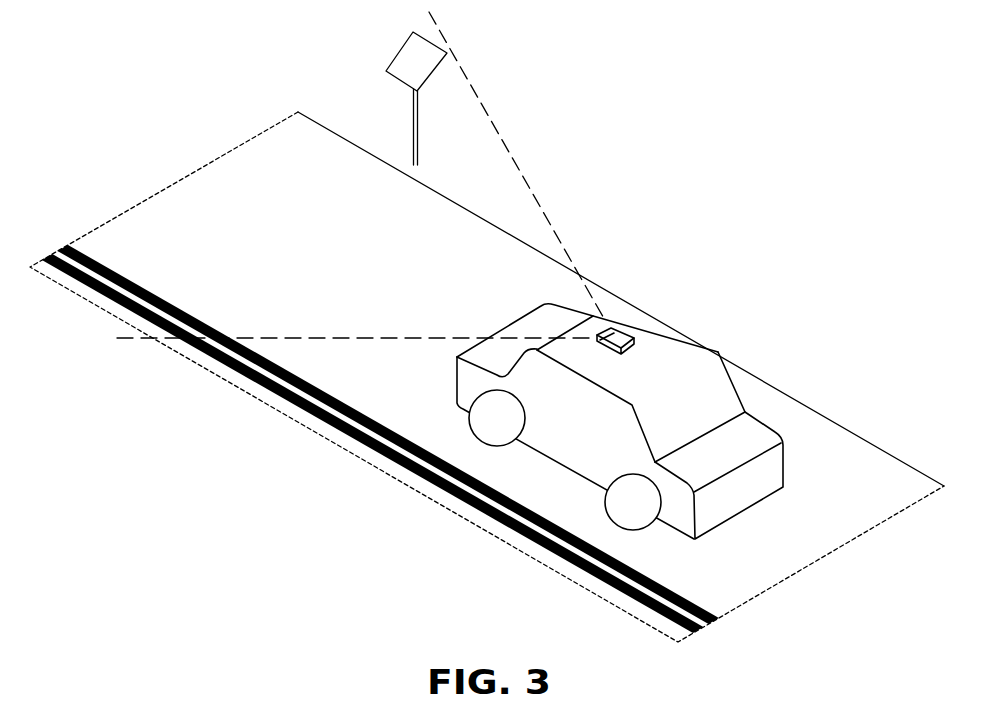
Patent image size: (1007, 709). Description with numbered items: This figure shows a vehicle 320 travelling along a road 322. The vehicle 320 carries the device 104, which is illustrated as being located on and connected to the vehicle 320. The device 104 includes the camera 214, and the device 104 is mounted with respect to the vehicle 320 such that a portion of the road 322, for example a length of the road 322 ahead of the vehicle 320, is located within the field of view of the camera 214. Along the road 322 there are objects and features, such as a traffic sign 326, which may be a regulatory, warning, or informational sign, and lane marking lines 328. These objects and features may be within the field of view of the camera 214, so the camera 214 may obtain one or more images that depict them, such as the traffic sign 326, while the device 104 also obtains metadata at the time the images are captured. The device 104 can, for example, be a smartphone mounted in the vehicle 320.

The device 104 is at (662, 319).
The camera 214 is at (609, 327).
The vehicle 320 is at (784, 468).
The road 322 is at (845, 426).
The traffic sign 326 is at (400, 50).
The lane marking lines 328 is at (118, 271).